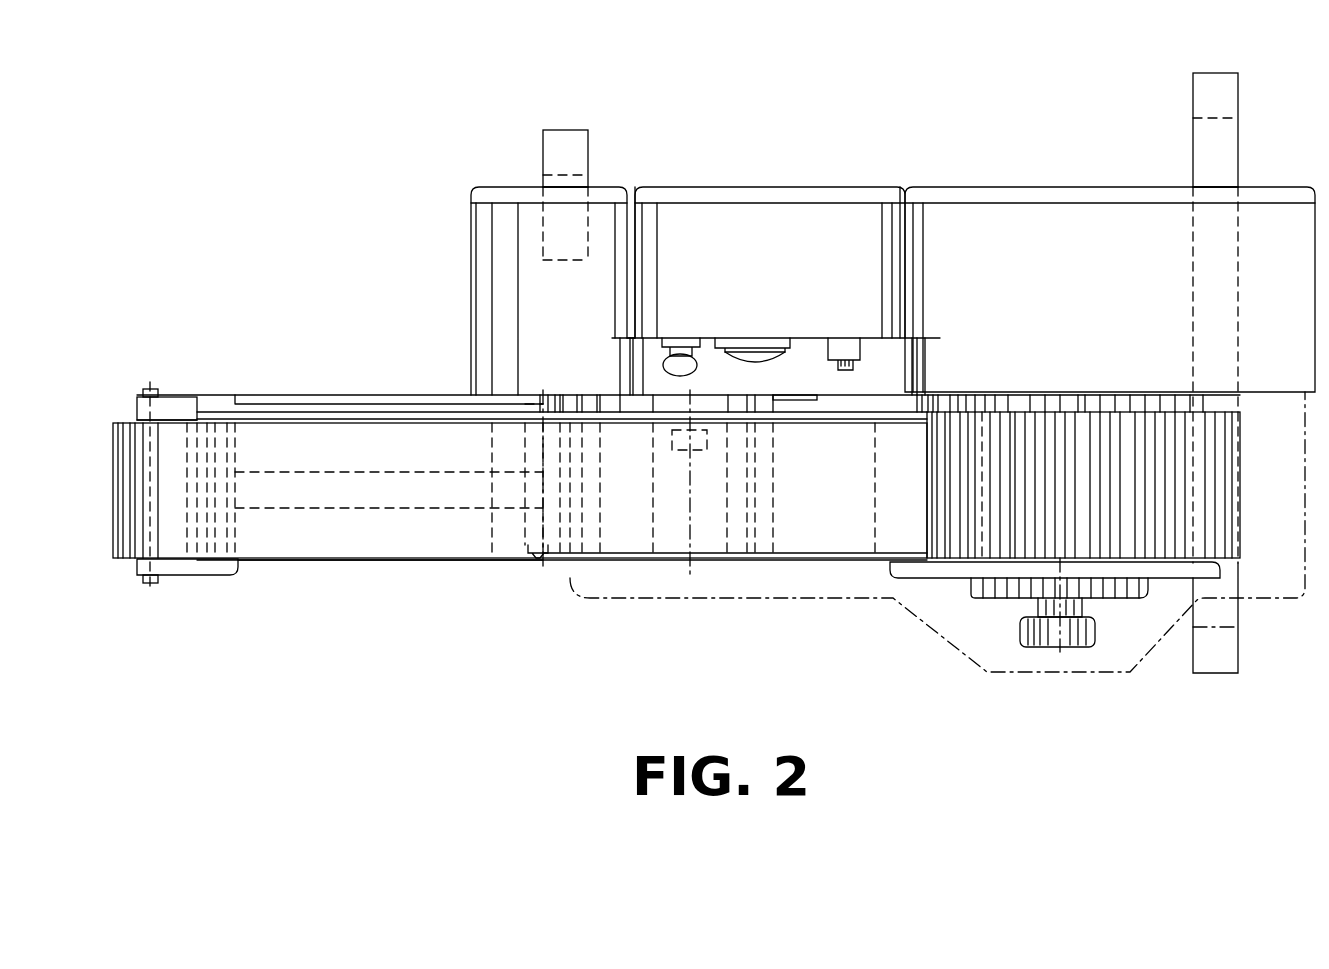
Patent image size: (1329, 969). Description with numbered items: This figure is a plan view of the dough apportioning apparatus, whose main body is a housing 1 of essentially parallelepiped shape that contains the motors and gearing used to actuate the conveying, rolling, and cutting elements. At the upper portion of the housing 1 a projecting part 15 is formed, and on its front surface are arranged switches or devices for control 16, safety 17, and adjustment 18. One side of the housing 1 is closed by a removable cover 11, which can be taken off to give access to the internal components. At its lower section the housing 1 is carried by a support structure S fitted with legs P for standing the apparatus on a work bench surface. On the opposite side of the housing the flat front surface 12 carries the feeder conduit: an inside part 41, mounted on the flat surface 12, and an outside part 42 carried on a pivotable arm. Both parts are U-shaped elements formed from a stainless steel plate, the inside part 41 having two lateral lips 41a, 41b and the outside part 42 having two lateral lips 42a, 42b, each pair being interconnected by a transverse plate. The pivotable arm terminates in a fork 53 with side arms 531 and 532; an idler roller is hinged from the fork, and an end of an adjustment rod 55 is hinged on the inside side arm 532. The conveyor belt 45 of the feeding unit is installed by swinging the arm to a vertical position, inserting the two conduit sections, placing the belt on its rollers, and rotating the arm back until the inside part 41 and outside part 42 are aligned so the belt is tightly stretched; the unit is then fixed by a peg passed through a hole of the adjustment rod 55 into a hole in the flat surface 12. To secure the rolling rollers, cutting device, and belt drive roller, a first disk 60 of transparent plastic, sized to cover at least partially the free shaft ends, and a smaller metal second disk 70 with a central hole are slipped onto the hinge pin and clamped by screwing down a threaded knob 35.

The housing 1 is at (455, 270).
The removable cover 11 is at (1062, 197).
The flat front surface 12 is at (827, 397).
The projecting part 15 is at (800, 232).
The control switch 16 is at (775, 365).
The safety switch 17 is at (700, 372).
The adjustment switch 18 is at (858, 366).
The threaded knob 35 is at (1043, 640).
The inside part of feeder conduit 41 is at (712, 565).
The lateral lip 41a is at (617, 412).
The lateral lip 41b is at (640, 560).
The outside part of feeder conduit 42 is at (342, 573).
The lateral lip 42a is at (282, 408).
The lateral lip 42b is at (300, 566).
The conveyor belt 45 is at (418, 447).
The fork 53 is at (202, 573).
The side arm 531 is at (175, 567).
The inside side arm 532 is at (185, 388).
The adjustment rod 55 is at (343, 400).
The first disk 60 is at (935, 580).
The second disk 70 is at (997, 600).
The legs P is at (543, 150).
The support structure S is at (543, 182).